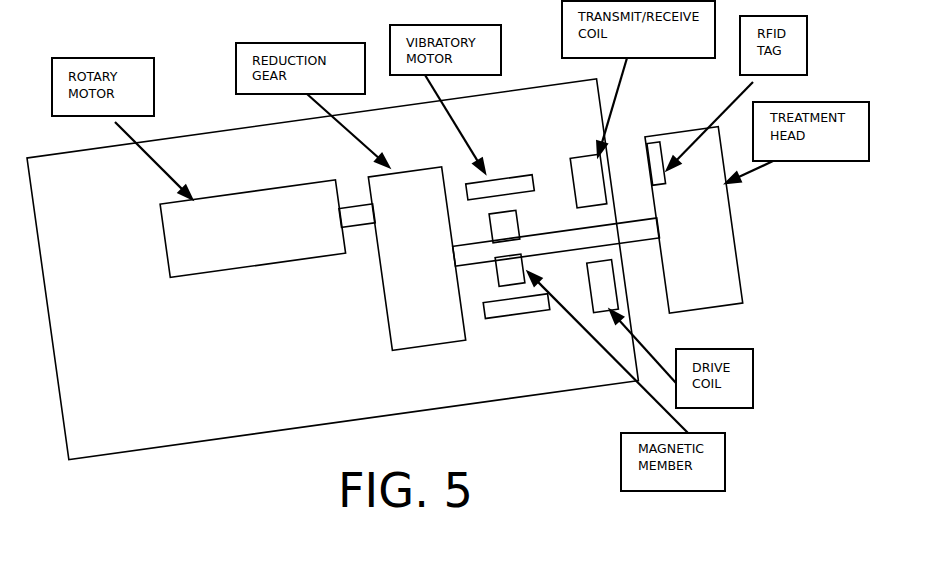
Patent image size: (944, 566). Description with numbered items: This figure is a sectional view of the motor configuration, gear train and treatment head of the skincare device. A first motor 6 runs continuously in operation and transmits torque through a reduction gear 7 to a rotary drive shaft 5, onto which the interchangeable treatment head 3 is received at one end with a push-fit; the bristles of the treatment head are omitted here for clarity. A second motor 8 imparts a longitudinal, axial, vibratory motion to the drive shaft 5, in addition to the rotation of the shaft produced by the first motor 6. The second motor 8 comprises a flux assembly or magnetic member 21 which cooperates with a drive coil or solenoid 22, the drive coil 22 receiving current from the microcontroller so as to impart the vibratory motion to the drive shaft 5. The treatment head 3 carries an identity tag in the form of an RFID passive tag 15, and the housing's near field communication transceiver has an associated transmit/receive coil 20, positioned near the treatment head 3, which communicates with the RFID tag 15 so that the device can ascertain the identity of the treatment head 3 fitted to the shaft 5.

The treatment head 3 is at (732, 215).
The drive shaft 5 is at (633, 220).
The first motor 6 is at (163, 241).
The reduction gear 7 is at (384, 300).
The second motor 8 is at (503, 162).
The RFID passive tag 15 is at (661, 147).
The transmit/receive coil 20 is at (583, 157).
The magnetic member 21 is at (526, 268).
The drive coil 22 is at (515, 318).